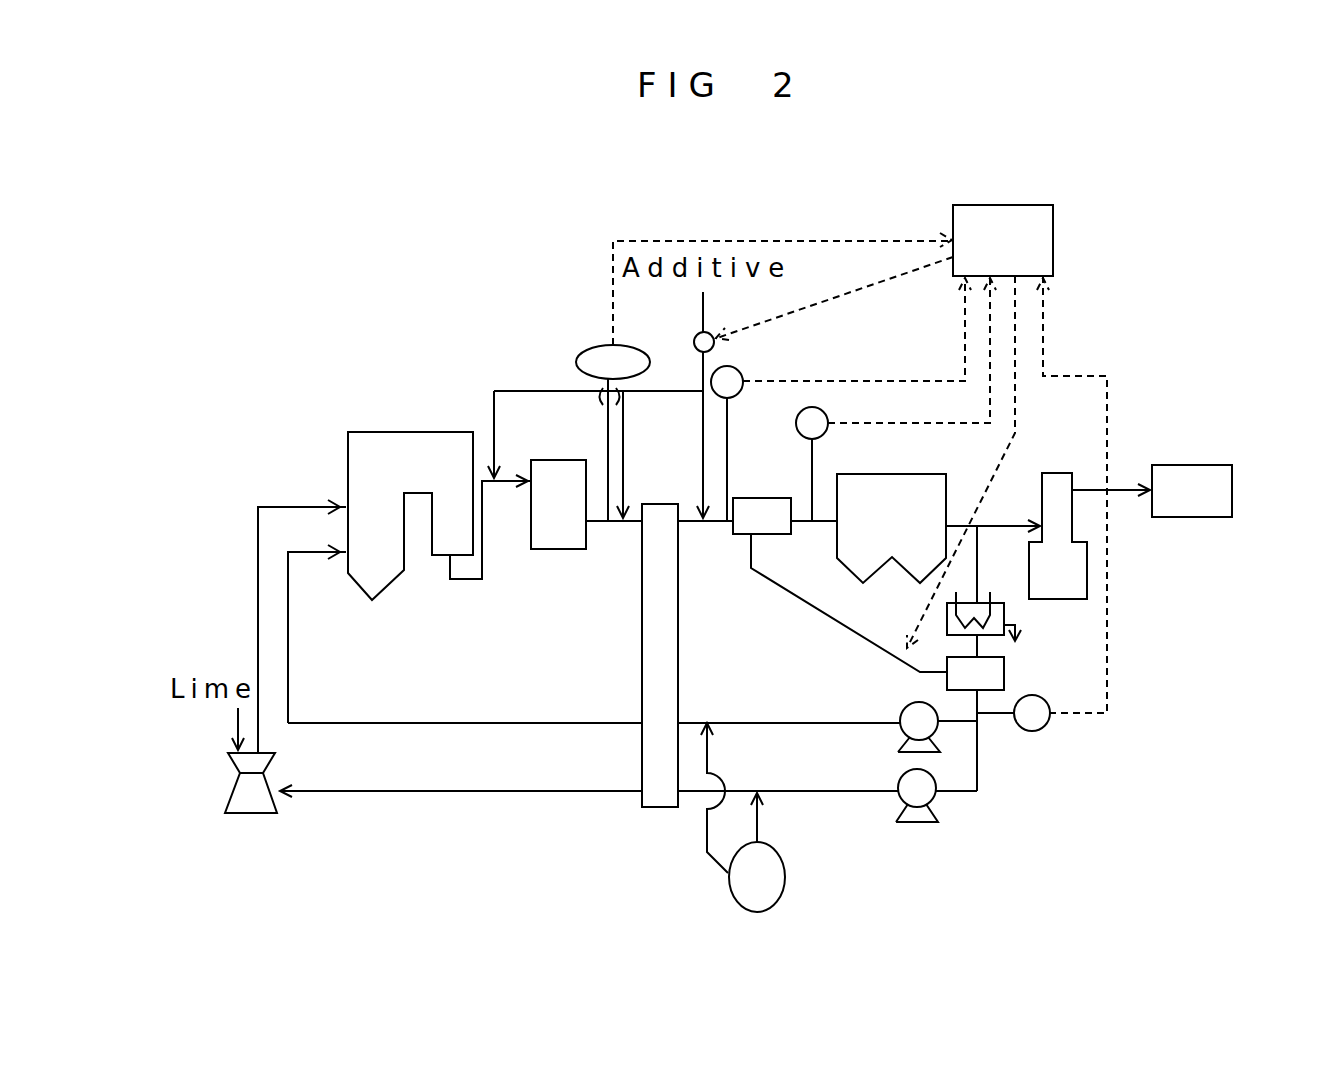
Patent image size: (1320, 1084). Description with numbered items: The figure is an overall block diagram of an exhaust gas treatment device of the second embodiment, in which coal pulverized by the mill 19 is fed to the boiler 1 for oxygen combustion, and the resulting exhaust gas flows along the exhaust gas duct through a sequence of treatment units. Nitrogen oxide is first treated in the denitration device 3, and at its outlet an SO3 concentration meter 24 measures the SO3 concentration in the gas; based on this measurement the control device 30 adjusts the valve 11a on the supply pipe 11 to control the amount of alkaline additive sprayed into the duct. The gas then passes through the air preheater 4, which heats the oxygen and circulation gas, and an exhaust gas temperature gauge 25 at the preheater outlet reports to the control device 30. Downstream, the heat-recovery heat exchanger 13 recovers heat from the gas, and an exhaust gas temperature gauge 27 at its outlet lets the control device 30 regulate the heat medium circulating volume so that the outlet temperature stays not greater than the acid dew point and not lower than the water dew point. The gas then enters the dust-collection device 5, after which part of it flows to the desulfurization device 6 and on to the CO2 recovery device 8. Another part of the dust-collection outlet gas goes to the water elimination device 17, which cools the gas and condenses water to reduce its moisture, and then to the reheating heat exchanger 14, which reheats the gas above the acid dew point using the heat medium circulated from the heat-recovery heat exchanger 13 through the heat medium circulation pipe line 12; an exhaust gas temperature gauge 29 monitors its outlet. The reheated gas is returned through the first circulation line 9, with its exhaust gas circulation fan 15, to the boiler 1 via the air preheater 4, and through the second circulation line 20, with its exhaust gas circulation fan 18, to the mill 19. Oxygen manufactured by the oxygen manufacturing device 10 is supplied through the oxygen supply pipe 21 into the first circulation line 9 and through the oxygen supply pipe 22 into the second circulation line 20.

The boiler 1 is at (432, 432).
The denitration device 3 is at (573, 460).
The air preheater 4 is at (660, 504).
The dust-collection device 5 is at (920, 474).
The desulfurization device 6 is at (1060, 473).
The CO2 recovery device 8 is at (1183, 465).
The first circulation line 9 is at (813, 721).
The oxygen manufacturing device 10 is at (775, 893).
The alkaline additive supply pipe 11 is at (704, 312).
The additive supply adjusting valve 11a is at (694, 342).
The heat medium circulation pipe line 12 is at (803, 605).
The heat-recovery heat exchanger 13 is at (756, 498).
The reheating heat exchanger 14 is at (1004, 677).
The exhaust gas circulation fan 15 is at (937, 738).
The water elimination device 17 is at (1005, 610).
The exhaust gas circulation fan 18 is at (937, 793).
The mill 19 is at (248, 817).
The second circulation line 20 is at (858, 791).
The oxygen supply pipe 21 is at (708, 760).
The oxygen supply pipe 22 is at (758, 832).
The SO3 concentration meter 24 is at (577, 365).
The exhaust gas temperature gauge 25 is at (740, 372).
The exhaust gas temperature gauge 27 is at (826, 410).
The exhaust gas temperature gauge 29 is at (1044, 728).
The control device 30 is at (993, 205).